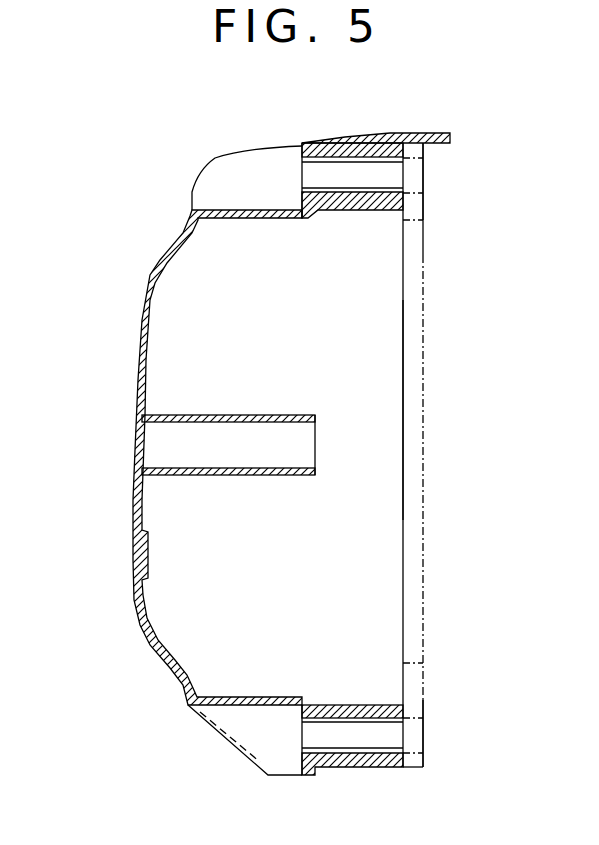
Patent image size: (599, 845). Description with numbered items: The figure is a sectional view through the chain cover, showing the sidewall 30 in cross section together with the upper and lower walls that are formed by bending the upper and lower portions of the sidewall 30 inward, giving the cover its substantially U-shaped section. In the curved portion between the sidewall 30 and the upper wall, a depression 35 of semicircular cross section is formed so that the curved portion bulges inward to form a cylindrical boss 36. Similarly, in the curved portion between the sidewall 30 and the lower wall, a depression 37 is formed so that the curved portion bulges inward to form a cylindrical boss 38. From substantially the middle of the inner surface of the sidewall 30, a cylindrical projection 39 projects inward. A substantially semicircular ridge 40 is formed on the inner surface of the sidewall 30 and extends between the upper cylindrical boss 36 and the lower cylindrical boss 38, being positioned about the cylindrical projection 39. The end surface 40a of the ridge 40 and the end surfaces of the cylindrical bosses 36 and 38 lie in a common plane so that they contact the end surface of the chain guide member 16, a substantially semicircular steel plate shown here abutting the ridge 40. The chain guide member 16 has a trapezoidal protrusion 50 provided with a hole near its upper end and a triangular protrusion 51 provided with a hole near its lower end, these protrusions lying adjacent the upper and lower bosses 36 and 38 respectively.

The chain guide member 16 is at (423, 537).
The sidewall 30 is at (133, 490).
The depression 35 is at (248, 179).
The cylindrical boss 36 is at (353, 142).
The depression 37 is at (258, 728).
The cylindrical boss 38 is at (347, 767).
The cylindrical projection 39 is at (255, 475).
The semicircular ridge 40 is at (380, 328).
The end surface of the ridge 40a is at (403, 412).
The trapezoidal protrusion 50 is at (423, 178).
The triangular protrusion 51 is at (425, 737).